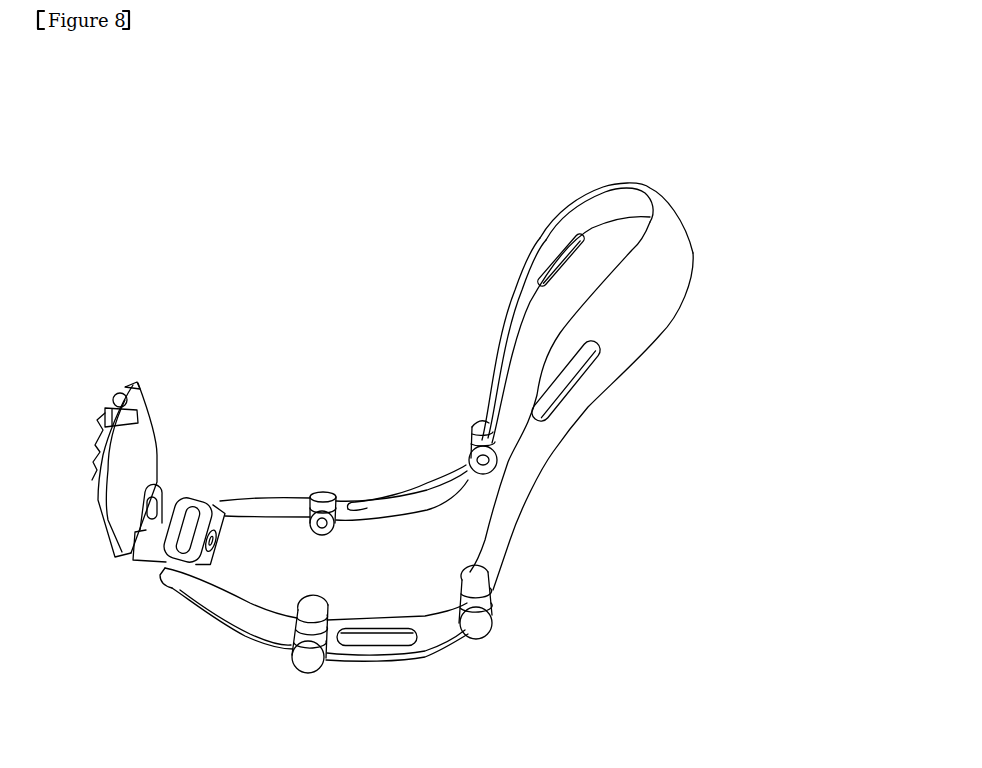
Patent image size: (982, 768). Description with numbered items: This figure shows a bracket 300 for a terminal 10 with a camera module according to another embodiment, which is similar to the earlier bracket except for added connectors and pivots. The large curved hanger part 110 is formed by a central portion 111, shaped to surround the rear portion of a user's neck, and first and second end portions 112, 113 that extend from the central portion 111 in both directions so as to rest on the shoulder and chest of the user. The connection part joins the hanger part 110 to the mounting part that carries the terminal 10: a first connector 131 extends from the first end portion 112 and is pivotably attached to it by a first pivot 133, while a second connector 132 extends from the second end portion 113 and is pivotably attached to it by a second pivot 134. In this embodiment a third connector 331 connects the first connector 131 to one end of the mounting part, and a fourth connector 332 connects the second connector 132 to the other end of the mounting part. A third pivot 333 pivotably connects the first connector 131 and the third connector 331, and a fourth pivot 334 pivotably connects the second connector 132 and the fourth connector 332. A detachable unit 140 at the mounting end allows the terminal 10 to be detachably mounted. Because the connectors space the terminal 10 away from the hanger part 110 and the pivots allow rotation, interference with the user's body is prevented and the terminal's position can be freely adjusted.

The bracket 300 is at (677, 146).
The hanger part 110 is at (707, 240).
The central portion 111 is at (684, 205).
The first end portion 112 is at (497, 322).
The second end portion 113 is at (554, 452).
The first pivot 133 is at (470, 428).
The first connector 131 is at (428, 483).
The third connector 331 is at (257, 497).
The third pivot 333 is at (323, 491).
The detachable unit 140 is at (127, 570).
The terminal 10 is at (100, 510).
The fourth connector 332 is at (224, 630).
The fourth pivot 334 is at (307, 675).
The second connector 132 is at (436, 656).
The second pivot 134 is at (490, 632).